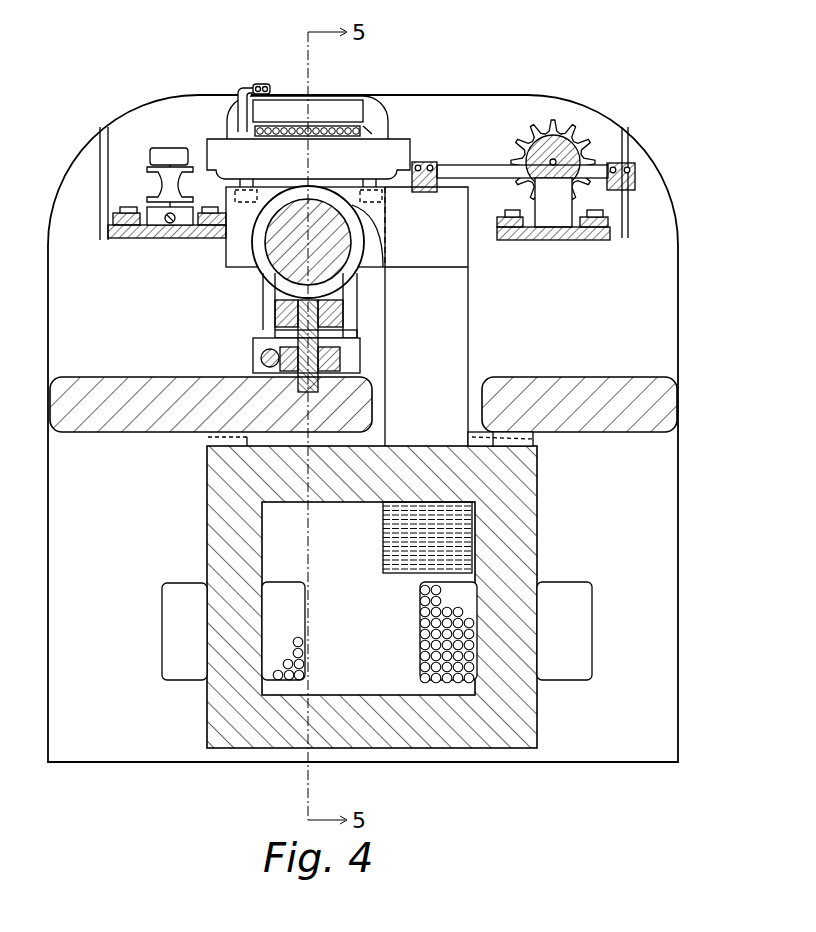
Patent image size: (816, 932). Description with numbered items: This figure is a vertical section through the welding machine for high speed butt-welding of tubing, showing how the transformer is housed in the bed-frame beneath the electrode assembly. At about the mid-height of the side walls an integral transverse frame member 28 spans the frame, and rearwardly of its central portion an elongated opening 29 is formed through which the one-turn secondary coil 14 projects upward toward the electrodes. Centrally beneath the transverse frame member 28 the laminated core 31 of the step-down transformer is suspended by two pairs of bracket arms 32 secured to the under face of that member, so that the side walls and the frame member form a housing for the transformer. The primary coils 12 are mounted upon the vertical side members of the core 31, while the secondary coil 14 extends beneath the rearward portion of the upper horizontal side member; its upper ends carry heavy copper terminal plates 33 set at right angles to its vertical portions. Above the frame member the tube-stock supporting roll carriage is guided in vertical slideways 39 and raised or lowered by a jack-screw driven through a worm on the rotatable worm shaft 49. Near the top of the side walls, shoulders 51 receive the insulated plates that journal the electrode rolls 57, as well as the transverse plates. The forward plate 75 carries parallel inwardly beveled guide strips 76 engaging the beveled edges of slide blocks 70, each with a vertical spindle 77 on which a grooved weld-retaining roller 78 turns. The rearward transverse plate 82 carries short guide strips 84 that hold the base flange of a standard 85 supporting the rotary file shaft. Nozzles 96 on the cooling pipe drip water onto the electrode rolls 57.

The primary coils 12 is at (162, 640).
The secondary coil 14 is at (472, 436).
The transverse frame member 28 is at (158, 417).
The elongated opening 29 is at (477, 380).
The laminated core 31 is at (517, 500).
The bracket arms 32 is at (207, 438).
The terminal plates 33 is at (455, 187).
The vertical slideways 39 is at (273, 333).
The worm shaft 49 is at (258, 357).
The shoulders 51 is at (108, 240).
The electrode rolls 57 is at (400, 139).
The slide blocks 70 is at (153, 208).
The forward plate 75 is at (155, 238).
The guide strips 76 is at (113, 222).
The vertical spindle 77 is at (150, 160).
The weld-retaining roller 78 is at (160, 183).
The rearward transverse plate 82 is at (590, 240).
The guide strips 84 is at (608, 222).
The standard 85 is at (573, 207).
The nozzles 96 is at (240, 110).